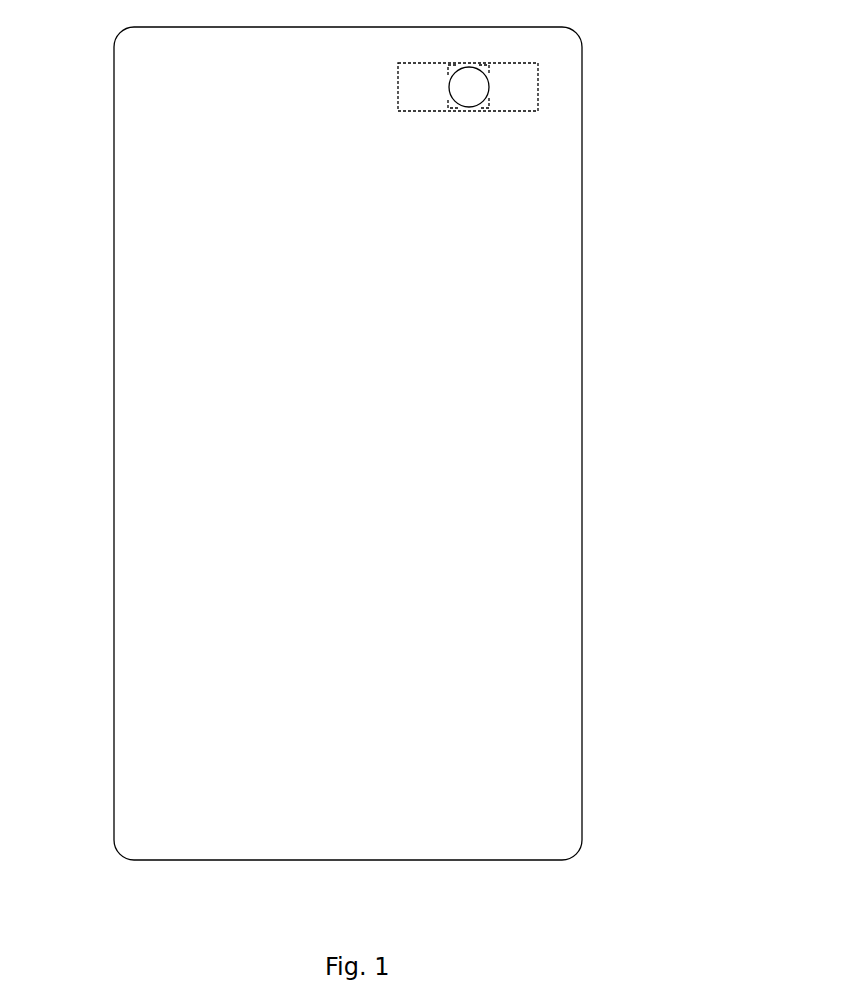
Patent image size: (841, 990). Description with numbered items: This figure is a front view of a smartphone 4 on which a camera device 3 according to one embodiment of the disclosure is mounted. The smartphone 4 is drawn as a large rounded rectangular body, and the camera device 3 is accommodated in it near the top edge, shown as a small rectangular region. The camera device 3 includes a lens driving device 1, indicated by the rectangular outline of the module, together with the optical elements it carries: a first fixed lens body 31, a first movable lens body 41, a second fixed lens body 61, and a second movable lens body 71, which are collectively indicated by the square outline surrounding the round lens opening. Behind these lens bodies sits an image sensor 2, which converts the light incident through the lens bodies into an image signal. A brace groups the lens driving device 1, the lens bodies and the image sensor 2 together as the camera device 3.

The lens driving device 1 is at (539, 72).
The image sensor 2 is at (490, 102).
The camera device 3 is at (566, 91).
The first fixed lens body 31 is at (574, 86).
The first movable lens body 41 is at (574, 86).
The second fixed lens body 61 is at (574, 86).
The second movable lens body 71 is at (475, 87).
The smartphone 4 is at (114, 577).